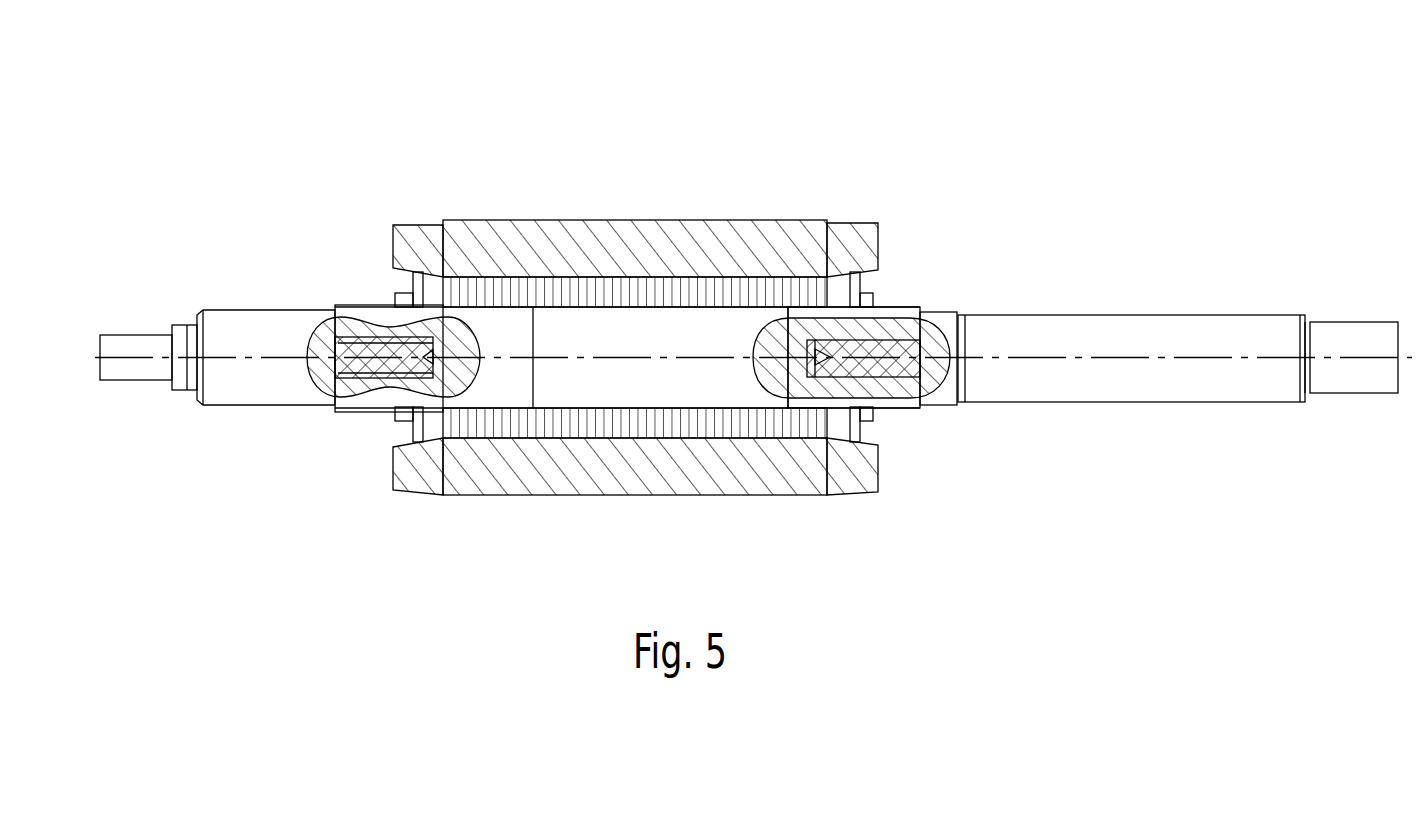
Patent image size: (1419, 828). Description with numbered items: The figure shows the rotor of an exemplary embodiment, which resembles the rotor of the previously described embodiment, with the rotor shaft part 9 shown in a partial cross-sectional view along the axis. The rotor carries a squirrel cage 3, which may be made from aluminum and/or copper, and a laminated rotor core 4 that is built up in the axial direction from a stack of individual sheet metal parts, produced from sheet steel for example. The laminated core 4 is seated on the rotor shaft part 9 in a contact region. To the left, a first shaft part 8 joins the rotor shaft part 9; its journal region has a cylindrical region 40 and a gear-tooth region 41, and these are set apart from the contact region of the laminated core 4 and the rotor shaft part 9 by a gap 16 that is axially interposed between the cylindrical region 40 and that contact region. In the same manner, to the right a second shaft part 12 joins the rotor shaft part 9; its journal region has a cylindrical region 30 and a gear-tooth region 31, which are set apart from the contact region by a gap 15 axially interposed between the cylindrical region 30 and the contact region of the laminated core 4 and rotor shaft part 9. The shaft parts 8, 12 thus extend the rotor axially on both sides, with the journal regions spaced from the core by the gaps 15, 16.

The squirrel cage 3 is at (570, 258).
The laminated rotor core 4 is at (625, 297).
The first shaft part 8 is at (270, 382).
The rotor shaft part 9 is at (700, 335).
The second shaft part 12 is at (1018, 332).
The gap 15 is at (802, 300).
The gap 16 is at (498, 302).
The cylindrical region 30 is at (843, 380).
The gear-tooth region 31 is at (890, 382).
The cylindrical region 40 is at (420, 335).
The gear-tooth region 41 is at (357, 335).